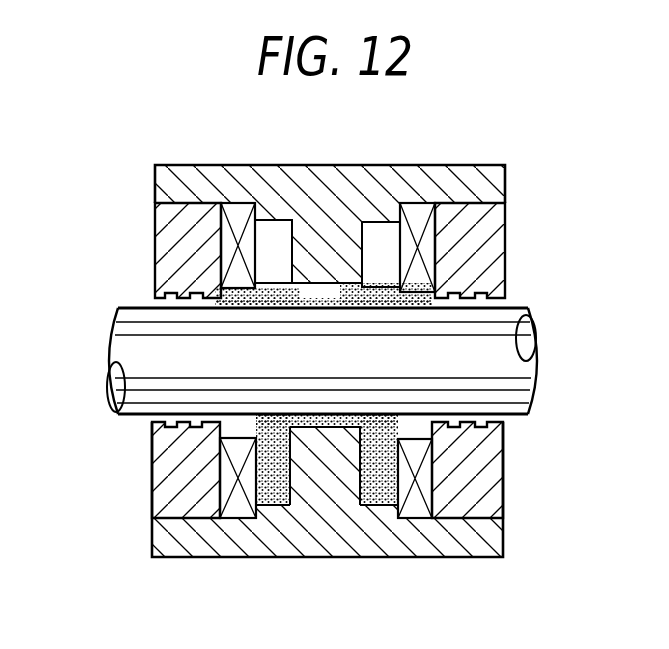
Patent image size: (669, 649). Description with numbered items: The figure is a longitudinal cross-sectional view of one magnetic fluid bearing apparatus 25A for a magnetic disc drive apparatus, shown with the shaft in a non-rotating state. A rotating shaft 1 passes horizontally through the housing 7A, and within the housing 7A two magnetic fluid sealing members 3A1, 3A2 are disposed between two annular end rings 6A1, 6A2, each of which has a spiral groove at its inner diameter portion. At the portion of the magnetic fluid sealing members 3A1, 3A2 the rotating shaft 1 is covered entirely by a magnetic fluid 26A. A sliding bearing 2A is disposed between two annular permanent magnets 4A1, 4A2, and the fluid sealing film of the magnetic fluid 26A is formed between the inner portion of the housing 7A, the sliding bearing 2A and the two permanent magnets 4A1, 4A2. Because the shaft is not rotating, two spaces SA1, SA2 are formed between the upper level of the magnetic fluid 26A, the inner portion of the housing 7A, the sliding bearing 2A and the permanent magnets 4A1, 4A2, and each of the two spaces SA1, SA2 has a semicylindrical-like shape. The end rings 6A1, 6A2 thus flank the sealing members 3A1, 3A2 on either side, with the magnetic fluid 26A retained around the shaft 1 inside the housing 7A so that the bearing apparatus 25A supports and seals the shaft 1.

The rotating shaft 1 is at (148, 340).
The sliding bearing 2A is at (335, 275).
The magnetic fluid sealing member 3A1 is at (237, 215).
The magnetic fluid sealing member 3A2 is at (393, 240).
The space SA1 is at (277, 237).
The space SA2 is at (373, 232).
The annular end ring 6A1 is at (177, 250).
The annular end ring 6A2 is at (497, 223).
The housing 7A is at (177, 175).
The annular permanent magnet 4A1 is at (223, 480).
The annular permanent magnet 4A2 is at (408, 512).
The magnetic fluid bearing apparatus 25A is at (300, 557).
The magnetic fluid 26A is at (397, 478).